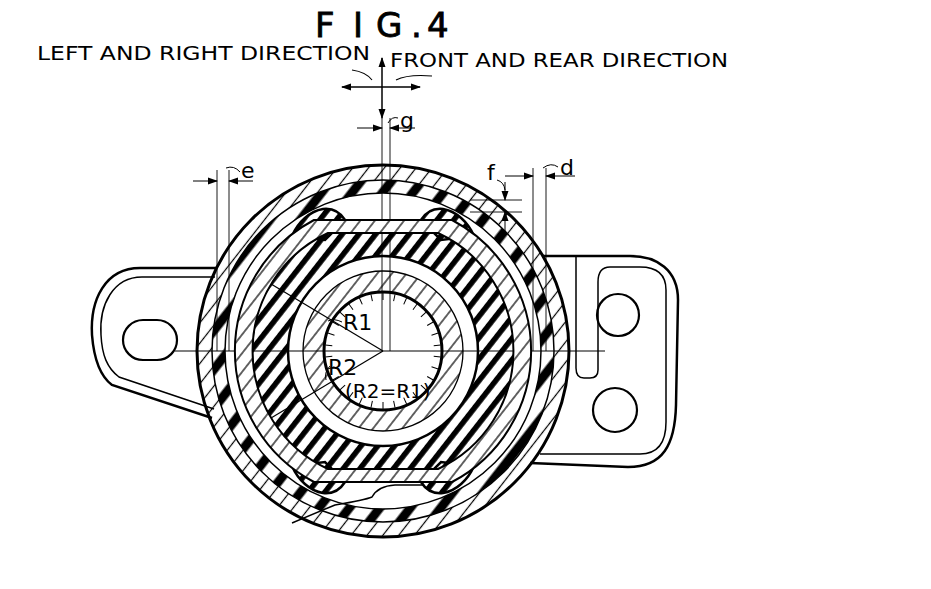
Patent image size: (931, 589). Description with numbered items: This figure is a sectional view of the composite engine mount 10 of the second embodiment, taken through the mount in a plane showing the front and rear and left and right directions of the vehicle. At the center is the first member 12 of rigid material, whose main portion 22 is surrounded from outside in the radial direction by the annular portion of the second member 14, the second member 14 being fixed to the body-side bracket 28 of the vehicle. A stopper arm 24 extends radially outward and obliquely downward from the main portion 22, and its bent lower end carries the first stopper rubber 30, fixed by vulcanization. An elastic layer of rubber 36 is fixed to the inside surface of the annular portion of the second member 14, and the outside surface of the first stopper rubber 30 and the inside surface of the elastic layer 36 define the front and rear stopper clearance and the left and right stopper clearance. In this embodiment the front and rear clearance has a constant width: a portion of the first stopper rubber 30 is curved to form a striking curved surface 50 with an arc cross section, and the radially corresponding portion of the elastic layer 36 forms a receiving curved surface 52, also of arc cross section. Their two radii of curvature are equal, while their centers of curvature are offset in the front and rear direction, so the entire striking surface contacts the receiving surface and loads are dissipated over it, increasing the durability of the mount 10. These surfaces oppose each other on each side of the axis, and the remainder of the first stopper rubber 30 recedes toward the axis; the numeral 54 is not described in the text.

The composite engine mount 10 is at (466, 170).
The first member 12 is at (290, 250).
The second member 14 is at (458, 187).
The main portion 22 is at (365, 245).
The stopper arm 24 is at (313, 250).
The body-side bracket 28 is at (667, 272).
The first stopper rubber 30 is at (268, 240).
The elastic layer of rubber 36 is at (490, 477).
The striking curved surface 50 is at (576, 257).
The receiving curved surface 52 is at (628, 257).
The stopper member 54 is at (406, 214).